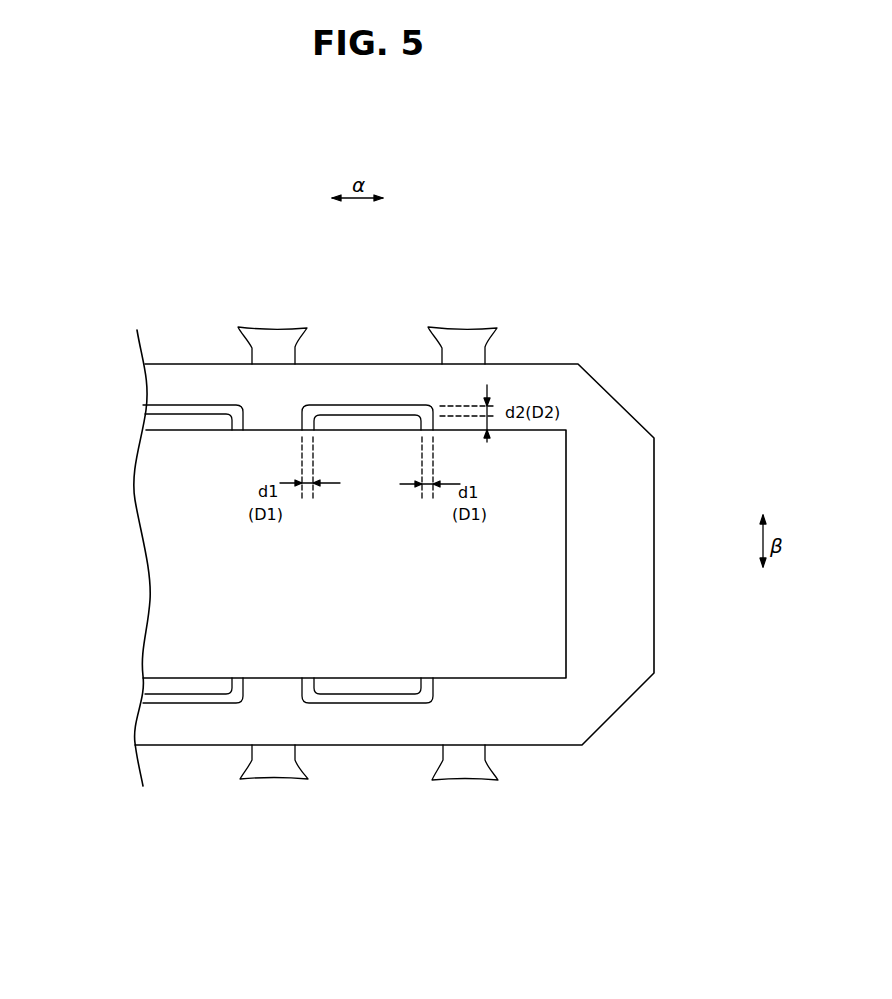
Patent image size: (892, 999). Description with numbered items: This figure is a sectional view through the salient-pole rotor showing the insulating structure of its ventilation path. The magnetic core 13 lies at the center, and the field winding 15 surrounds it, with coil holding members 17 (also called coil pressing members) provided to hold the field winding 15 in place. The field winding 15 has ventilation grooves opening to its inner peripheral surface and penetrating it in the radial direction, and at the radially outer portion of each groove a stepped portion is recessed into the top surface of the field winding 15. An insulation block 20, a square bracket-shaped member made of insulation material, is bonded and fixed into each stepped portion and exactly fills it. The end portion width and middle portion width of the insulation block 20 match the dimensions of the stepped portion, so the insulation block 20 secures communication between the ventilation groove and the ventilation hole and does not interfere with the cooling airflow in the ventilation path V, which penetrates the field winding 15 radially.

The magnetic core 13 is at (182, 548).
The field winding 15 is at (637, 547).
The coil holding member 17 is at (273, 338).
The insulation block 20 is at (202, 407).
The ventilation path V is at (166, 417).